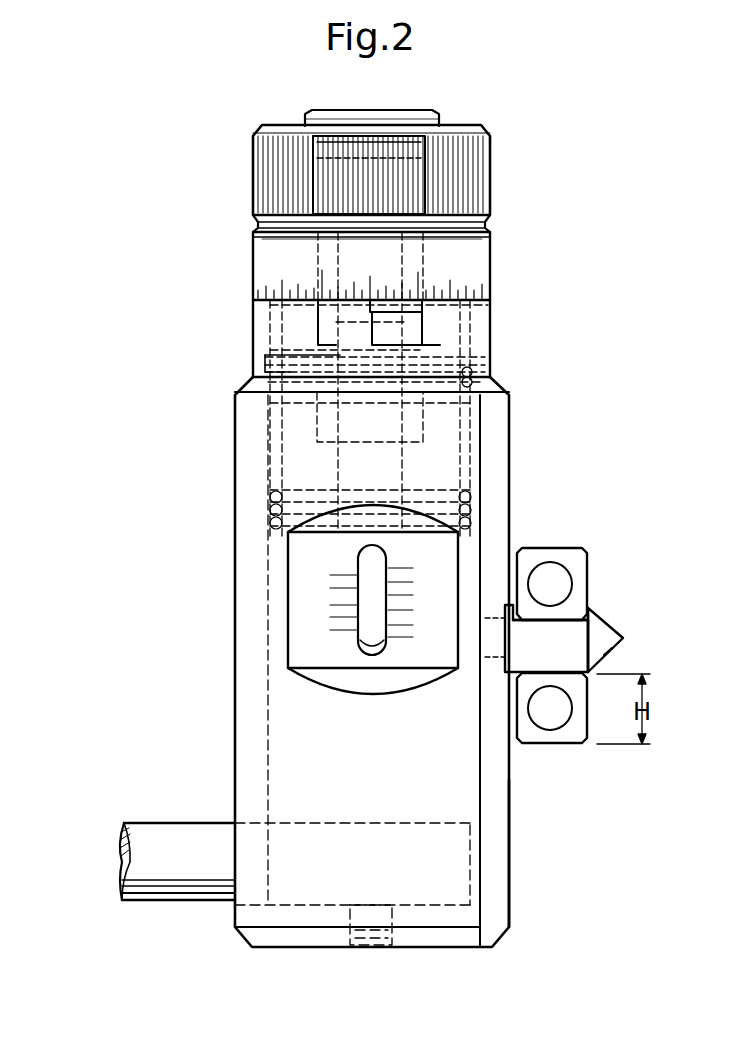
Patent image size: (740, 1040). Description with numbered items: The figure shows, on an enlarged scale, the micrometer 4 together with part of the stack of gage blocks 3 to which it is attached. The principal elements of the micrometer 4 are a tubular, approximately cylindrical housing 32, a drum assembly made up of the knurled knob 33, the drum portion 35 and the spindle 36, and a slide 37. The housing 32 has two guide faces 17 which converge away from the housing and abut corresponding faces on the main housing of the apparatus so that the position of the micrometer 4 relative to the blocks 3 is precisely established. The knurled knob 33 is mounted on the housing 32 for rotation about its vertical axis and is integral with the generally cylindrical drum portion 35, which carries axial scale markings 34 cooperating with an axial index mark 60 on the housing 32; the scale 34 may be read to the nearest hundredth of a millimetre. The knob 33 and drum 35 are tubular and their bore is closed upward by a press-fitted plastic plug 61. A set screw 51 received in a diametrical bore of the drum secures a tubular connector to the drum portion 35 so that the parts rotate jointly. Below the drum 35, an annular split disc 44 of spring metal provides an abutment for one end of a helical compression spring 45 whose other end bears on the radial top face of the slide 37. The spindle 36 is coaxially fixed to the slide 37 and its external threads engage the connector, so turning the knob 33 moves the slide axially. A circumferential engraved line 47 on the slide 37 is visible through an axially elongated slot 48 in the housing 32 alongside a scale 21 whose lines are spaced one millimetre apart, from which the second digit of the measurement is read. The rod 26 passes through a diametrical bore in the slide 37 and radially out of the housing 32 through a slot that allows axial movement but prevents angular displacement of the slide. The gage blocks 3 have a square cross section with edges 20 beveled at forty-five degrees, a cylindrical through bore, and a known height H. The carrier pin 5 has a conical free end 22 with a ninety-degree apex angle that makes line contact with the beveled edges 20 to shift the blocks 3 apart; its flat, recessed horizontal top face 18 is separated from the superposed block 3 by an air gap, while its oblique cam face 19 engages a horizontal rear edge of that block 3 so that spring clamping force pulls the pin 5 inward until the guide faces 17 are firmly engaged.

The plastic plug 61 is at (410, 122).
The knurled knob 33 is at (491, 180).
The axial scale markings 34 is at (482, 282).
The drum portion 35 is at (268, 243).
The axial index mark 60 is at (372, 318).
The set screw 51 is at (285, 336).
The annular split disc 44 is at (492, 352).
The helical compression spring 45 is at (490, 380).
The tubular housing 32 is at (247, 460).
The micrometer 4 is at (218, 526).
The spindle 36 is at (395, 467).
The scale 21 is at (338, 598).
The axially elongated slot 48 is at (373, 568).
The circumferential engraved line 47 is at (375, 642).
The slide 37 is at (300, 788).
The rod 26 is at (167, 896).
The gage blocks 3 is at (550, 578).
The top face 18 is at (556, 625).
The beveled edges 20 is at (586, 590).
The oblique cam face 19 is at (584, 618).
The carrier pin 5 is at (602, 636).
The free end 22 is at (610, 654).
The guide faces 17 is at (502, 887).